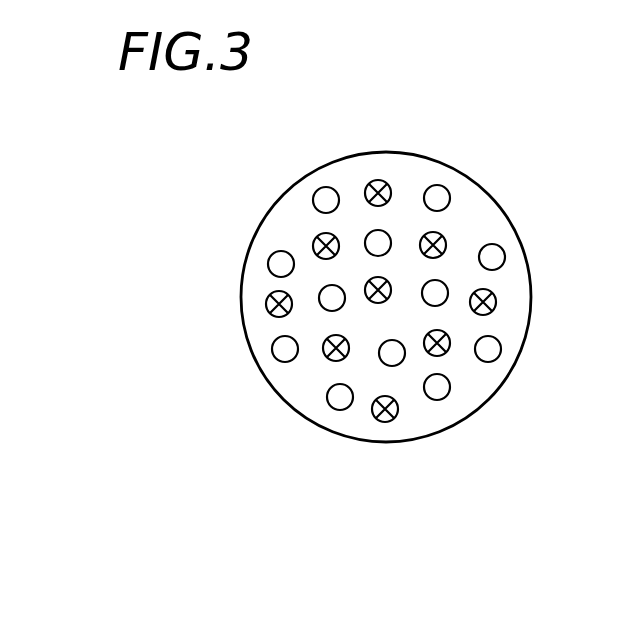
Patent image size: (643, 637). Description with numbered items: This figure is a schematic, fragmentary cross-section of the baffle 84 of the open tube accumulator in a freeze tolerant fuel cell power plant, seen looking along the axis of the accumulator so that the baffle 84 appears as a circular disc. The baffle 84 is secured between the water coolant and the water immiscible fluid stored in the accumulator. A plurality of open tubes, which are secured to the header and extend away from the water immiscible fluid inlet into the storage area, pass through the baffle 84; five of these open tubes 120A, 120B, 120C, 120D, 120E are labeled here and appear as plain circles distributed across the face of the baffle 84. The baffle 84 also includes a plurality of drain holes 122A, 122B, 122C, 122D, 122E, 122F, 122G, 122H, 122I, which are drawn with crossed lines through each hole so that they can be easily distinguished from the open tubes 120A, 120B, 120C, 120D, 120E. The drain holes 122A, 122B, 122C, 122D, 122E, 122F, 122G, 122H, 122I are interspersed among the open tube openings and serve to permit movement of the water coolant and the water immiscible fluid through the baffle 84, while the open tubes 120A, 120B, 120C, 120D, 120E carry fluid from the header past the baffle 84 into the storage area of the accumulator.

The baffle 84 is at (440, 158).
The open tube 120A is at (285, 349).
The open tube 120B is at (340, 397).
The open tube 120C is at (392, 353).
The open tube 120D is at (437, 388).
The open tube 120E is at (487, 350).
The drain hole 122A is at (390, 420).
The drain hole 122B is at (452, 345).
The drain hole 122C is at (496, 300).
The drain hole 122D is at (446, 242).
The drain hole 122E is at (383, 179).
The drain hole 122F is at (316, 238).
The drain hole 122G is at (368, 283).
The drain hole 122H is at (266, 304).
The drain hole 122I is at (326, 339).